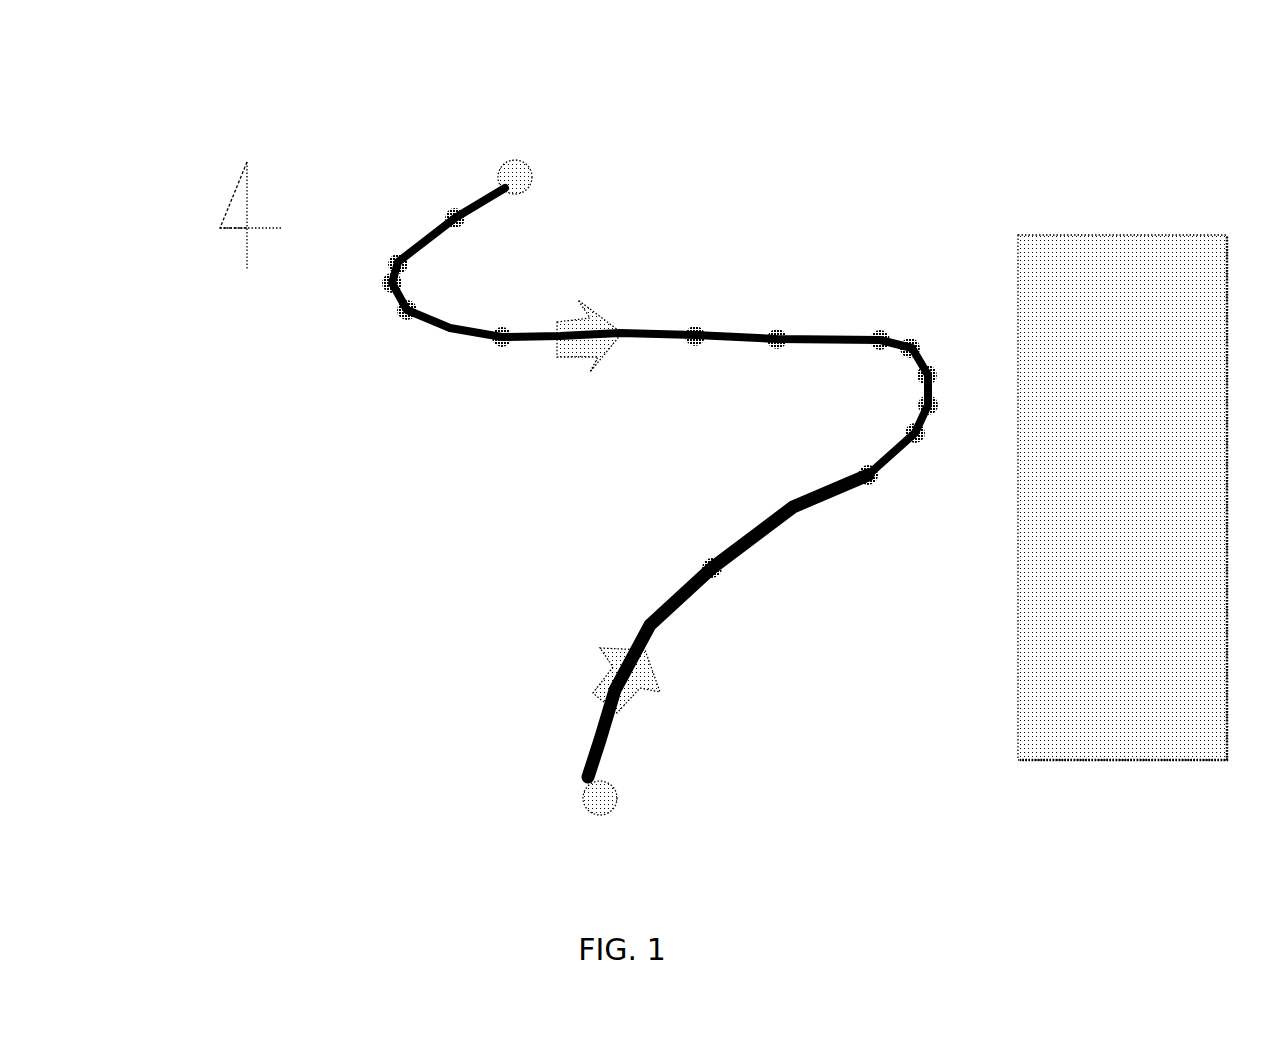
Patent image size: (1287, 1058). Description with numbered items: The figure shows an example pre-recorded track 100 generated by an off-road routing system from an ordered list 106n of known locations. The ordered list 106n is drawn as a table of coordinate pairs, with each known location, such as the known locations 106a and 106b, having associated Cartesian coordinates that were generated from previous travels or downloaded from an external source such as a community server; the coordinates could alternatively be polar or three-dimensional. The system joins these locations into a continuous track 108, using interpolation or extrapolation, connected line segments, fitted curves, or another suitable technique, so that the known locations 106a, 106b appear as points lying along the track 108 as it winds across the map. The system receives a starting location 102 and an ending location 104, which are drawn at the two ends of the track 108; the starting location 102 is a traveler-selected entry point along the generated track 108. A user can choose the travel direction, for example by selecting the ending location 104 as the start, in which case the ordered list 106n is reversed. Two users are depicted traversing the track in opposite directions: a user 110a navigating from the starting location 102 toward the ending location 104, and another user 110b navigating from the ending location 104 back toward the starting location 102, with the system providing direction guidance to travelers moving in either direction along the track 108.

The pre-recorded track 100 is at (176, 68).
The starting location 102 is at (602, 797).
The ending location 104 is at (516, 176).
The known location 106a is at (504, 329).
The known location 106b is at (697, 328).
The ordered list of known locations 106n is at (1168, 236).
The track 108 is at (792, 505).
The user 110a is at (608, 655).
The user 110b is at (596, 320).